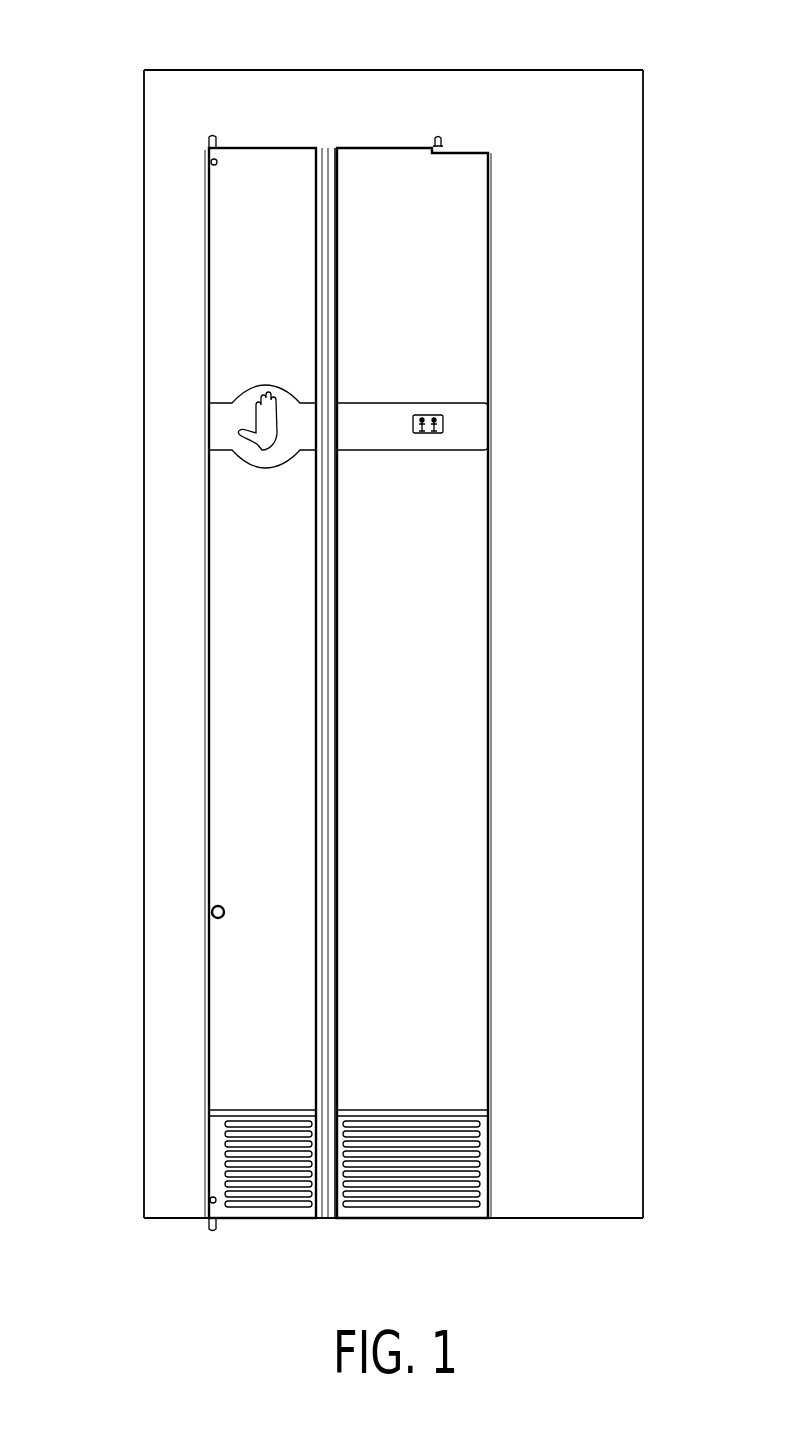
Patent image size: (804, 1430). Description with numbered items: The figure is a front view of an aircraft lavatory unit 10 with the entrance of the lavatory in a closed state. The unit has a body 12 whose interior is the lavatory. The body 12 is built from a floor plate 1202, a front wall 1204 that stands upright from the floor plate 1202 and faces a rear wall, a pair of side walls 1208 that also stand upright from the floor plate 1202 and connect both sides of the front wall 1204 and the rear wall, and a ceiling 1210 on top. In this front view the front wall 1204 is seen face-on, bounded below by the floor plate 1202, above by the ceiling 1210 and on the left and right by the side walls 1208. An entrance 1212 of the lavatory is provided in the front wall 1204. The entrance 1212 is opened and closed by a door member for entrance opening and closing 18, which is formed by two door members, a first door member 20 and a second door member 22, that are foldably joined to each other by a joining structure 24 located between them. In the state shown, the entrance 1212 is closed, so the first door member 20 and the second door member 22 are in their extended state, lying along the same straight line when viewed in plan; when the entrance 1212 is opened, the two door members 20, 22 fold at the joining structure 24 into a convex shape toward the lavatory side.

The aircraft lavatory unit 10 is at (180, 60).
The body 12 is at (393, 643).
The door member for entrance opening and closing 18 is at (405, 45).
The first door member 20 is at (266, 172).
The second door member 22 is at (403, 172).
The joining structure 24 is at (315, 240).
The floor plate 1202 is at (527, 1220).
The front wall 1204 is at (580, 551).
The side walls 1208 is at (144, 627).
The ceiling 1210 is at (530, 70).
The entrance 1212 is at (483, 310).